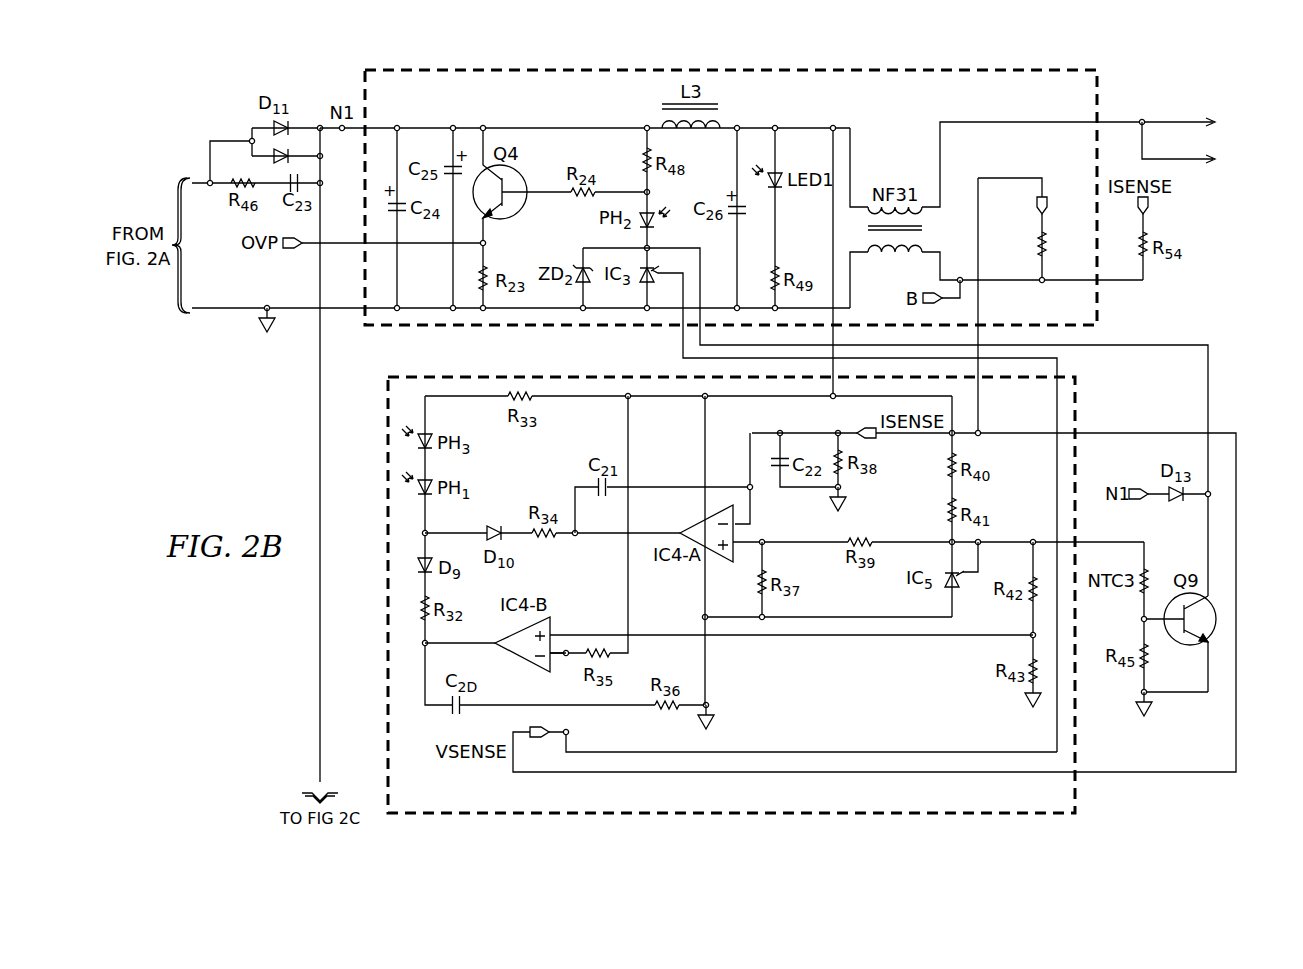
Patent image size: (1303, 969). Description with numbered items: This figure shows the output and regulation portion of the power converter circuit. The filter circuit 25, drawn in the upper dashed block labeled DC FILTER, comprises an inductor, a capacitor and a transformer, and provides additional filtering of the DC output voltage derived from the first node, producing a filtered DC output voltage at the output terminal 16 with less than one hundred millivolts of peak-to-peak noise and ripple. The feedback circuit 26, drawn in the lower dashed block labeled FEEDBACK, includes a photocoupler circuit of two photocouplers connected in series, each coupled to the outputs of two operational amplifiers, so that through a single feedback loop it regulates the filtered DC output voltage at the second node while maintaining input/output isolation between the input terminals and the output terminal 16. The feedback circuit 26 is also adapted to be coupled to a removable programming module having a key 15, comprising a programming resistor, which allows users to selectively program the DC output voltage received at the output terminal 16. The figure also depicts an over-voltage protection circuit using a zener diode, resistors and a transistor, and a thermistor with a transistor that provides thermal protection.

The key 15 is at (1038, 241).
The output terminal 16 is at (1188, 161).
The filter circuit 25 is at (1098, 302).
The feedback circuit 26 is at (1076, 731).